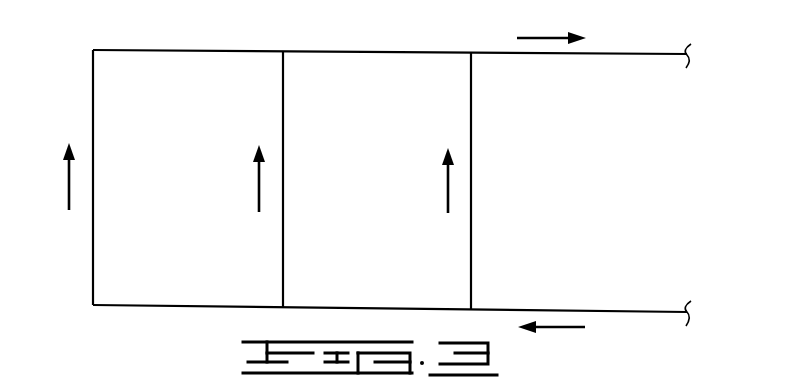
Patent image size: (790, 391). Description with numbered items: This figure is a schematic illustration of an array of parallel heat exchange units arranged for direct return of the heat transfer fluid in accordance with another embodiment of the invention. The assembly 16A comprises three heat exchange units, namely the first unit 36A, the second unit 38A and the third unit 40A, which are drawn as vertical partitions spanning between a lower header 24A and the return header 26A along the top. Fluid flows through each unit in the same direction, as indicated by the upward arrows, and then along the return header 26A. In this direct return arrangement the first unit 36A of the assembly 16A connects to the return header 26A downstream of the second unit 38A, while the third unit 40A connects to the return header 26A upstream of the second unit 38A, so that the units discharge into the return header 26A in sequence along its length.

The assembly 16A is at (516, 159).
The supply header 24A is at (333, 308).
The return header 26A is at (200, 50).
The first unit 36A is at (471, 227).
The second unit 38A is at (283, 225).
The third unit 40A is at (93, 223).